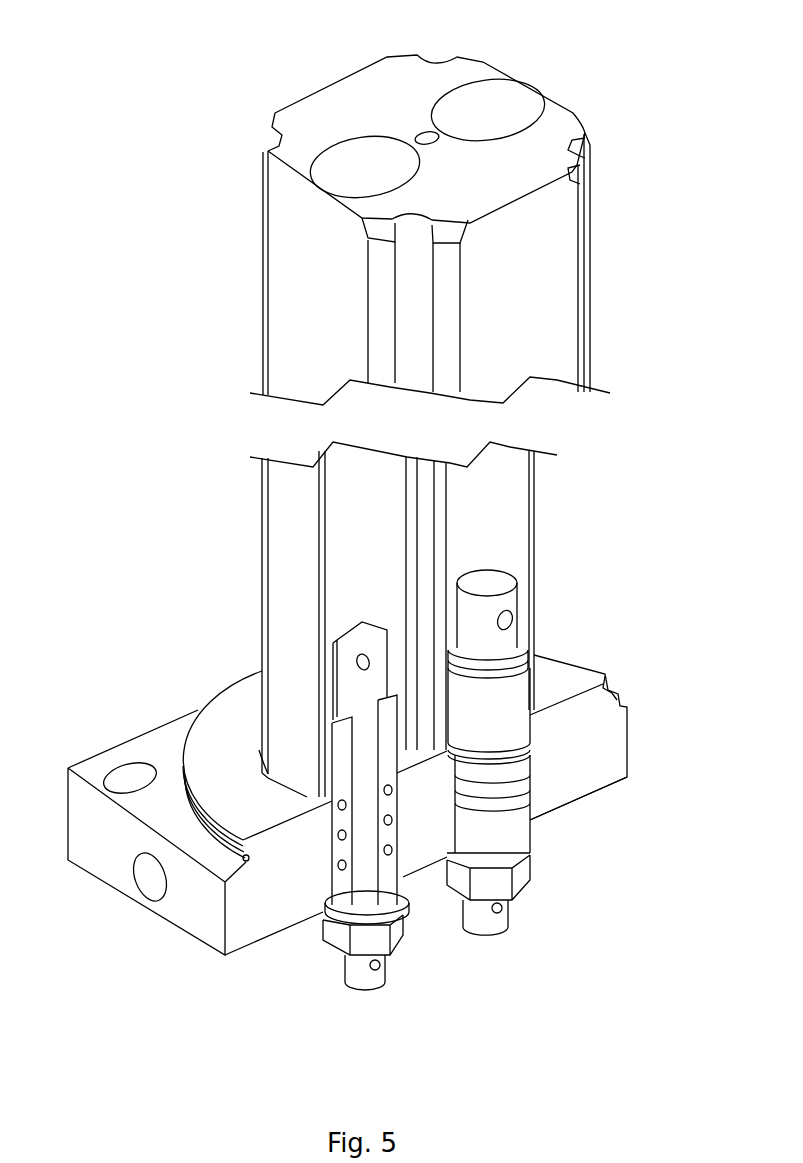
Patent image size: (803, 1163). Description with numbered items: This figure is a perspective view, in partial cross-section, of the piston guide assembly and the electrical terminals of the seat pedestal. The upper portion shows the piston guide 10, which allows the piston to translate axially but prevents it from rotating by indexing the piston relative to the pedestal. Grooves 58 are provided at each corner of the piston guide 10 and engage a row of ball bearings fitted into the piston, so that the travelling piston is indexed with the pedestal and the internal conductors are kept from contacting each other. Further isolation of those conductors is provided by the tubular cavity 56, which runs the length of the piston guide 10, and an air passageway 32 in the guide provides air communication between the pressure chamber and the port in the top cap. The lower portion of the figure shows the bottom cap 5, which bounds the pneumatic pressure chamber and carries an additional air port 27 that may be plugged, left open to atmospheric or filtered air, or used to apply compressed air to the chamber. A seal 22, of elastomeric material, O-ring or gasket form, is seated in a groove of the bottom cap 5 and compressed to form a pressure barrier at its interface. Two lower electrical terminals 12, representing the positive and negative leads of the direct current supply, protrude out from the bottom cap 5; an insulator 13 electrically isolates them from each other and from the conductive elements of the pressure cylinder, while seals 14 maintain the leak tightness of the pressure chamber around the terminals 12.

The piston guide 10 is at (567, 242).
The tubular cavity 56 is at (487, 77).
The air passageway 32 is at (422, 133).
The grooves 58 is at (397, 307).
The bottom cap 5 is at (630, 752).
The seal 22 is at (617, 692).
The air port 27 is at (152, 882).
The seals 14 is at (338, 847).
The insulator 13 is at (322, 923).
The lower electrical terminals 12 is at (382, 982).